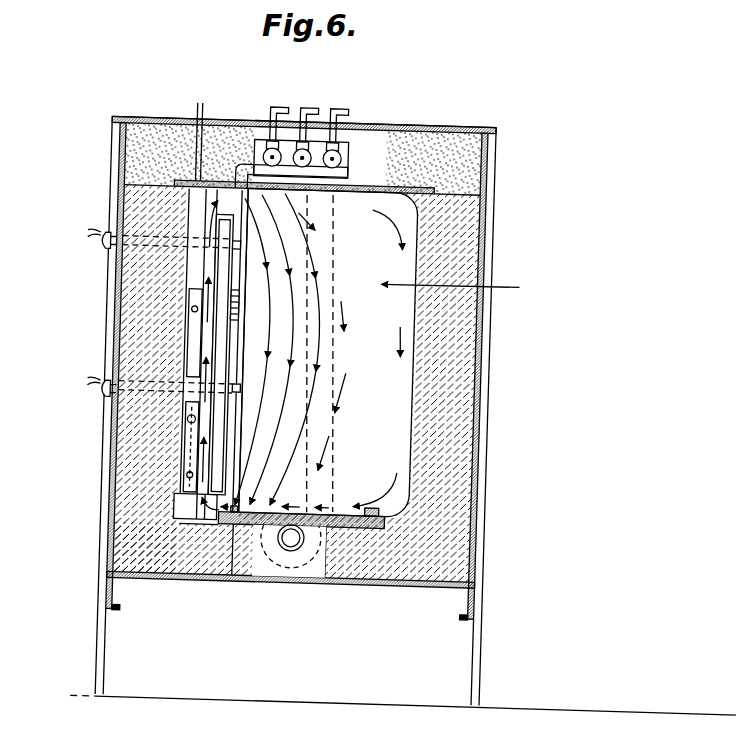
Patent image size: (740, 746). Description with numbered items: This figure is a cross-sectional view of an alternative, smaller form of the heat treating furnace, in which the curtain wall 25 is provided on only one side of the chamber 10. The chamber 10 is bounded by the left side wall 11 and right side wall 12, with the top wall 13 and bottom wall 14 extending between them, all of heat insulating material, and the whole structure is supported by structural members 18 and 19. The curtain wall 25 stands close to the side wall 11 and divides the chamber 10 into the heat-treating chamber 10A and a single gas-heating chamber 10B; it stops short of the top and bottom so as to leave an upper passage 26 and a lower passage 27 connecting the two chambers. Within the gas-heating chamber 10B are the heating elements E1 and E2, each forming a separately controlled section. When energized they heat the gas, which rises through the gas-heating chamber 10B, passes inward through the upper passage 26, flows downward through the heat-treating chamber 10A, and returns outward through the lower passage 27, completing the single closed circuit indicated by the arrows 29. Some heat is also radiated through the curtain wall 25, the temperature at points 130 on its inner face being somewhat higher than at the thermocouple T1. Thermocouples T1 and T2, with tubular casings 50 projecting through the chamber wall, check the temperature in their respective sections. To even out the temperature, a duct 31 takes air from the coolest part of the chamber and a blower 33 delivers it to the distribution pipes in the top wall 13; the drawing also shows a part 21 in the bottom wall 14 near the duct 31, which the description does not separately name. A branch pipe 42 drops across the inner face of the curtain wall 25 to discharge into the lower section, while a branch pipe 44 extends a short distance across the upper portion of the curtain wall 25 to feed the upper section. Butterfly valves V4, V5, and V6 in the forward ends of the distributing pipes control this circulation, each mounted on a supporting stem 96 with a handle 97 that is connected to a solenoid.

The chamber 10 is at (361, 252).
The heat-treating chamber 10A is at (464, 288).
The gas-heating chamber 10B is at (96, 388).
The side wall 11 is at (133, 331).
The side wall 12 is at (456, 338).
The top wall 13 is at (427, 126).
The bottom wall 14 is at (180, 564).
The structural member 18 is at (116, 609).
The structural member 19 is at (108, 596).
The drain passage 21 is at (238, 530).
The curtain wall 25 is at (217, 299).
The upper passage 26 is at (222, 214).
The lower passage 27 is at (210, 518).
The arrows 29 is at (398, 324).
The duct 31 is at (300, 548).
The blower 33 is at (273, 561).
The branch pipe 42 is at (236, 307).
The branch pipe 44 is at (326, 203).
The tubular casing 50 is at (120, 270).
The supporting stem 96 is at (265, 150).
The handle 97 is at (331, 149).
The points 130 is at (228, 455).
The heating element E1 is at (186, 453).
The heating element E2 is at (184, 361).
The thermocouple T1 is at (240, 390).
The thermocouple T2 is at (236, 248).
The butterfly valve V4 is at (338, 159).
The butterfly valve V5 is at (255, 151).
The butterfly valve V6 is at (297, 150).